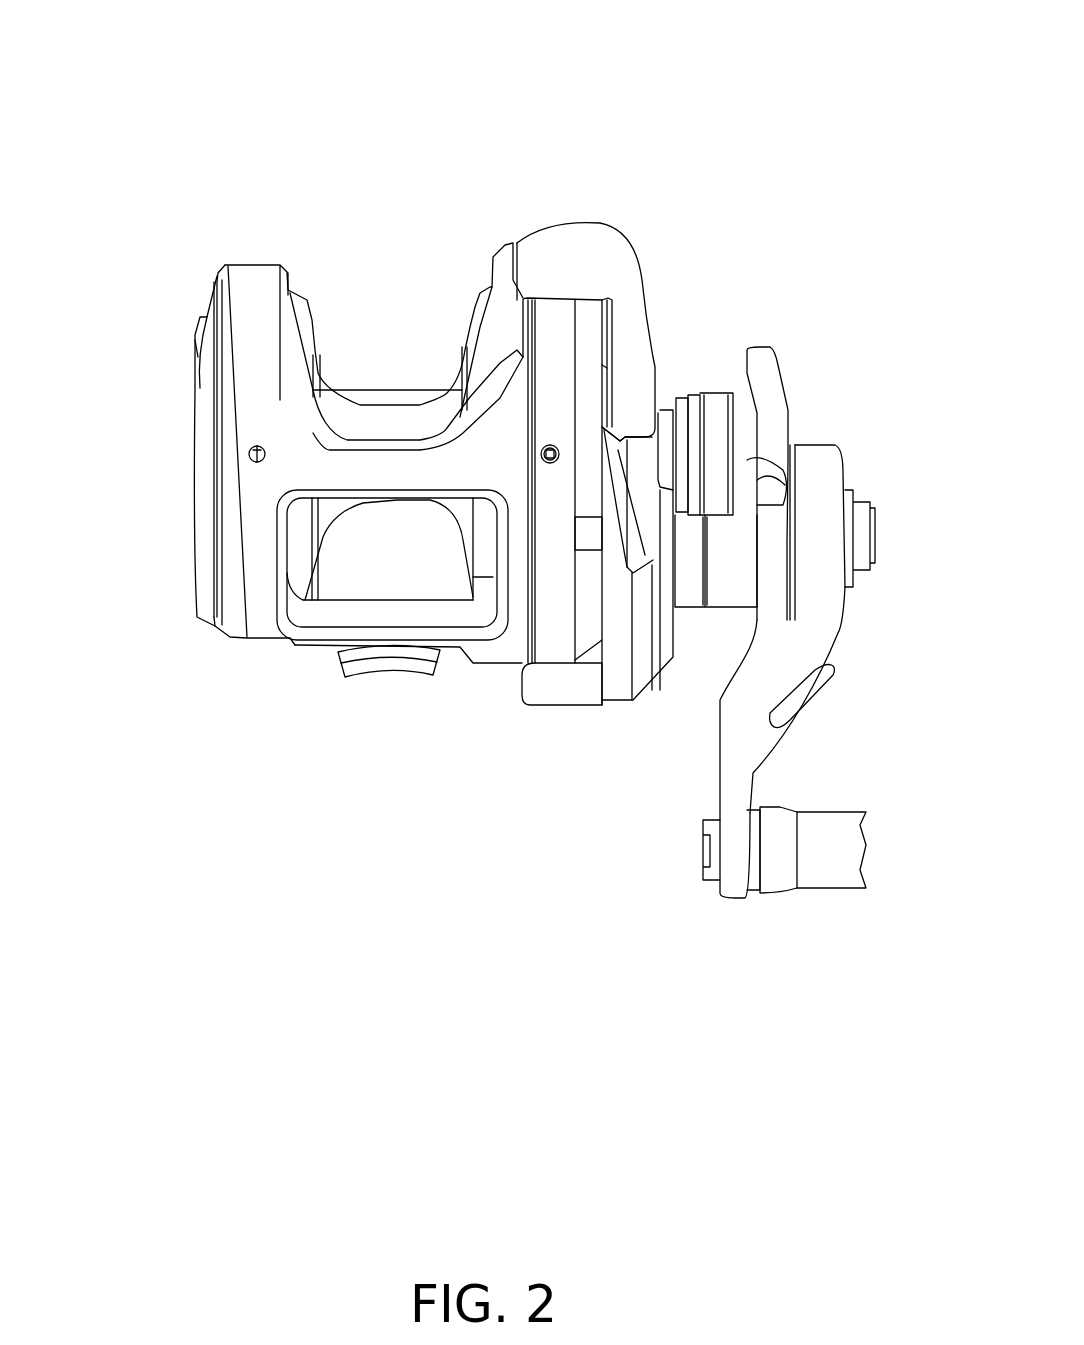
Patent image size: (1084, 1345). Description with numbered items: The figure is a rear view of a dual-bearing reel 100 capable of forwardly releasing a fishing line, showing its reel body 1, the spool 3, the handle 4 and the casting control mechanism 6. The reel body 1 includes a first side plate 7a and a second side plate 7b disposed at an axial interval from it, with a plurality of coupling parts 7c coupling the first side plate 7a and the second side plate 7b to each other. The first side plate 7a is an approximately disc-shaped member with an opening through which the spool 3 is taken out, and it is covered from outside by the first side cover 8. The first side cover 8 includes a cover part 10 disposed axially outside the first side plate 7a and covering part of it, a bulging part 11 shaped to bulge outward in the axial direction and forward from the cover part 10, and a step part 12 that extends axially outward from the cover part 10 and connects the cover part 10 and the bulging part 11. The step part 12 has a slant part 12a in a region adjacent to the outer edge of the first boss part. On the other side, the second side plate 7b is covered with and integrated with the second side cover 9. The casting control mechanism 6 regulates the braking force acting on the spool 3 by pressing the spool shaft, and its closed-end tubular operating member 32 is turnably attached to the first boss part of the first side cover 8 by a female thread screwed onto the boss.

The dual-bearing reel 100 is at (719, 101).
The reel body 1 is at (492, 243).
The spool 3 is at (388, 398).
The handle 4 is at (745, 910).
The casting control mechanism 6 is at (718, 368).
The first side plate 7a is at (523, 243).
The second side plate 7b is at (258, 265).
The coupling parts 7c is at (325, 648).
The first side cover 8 is at (580, 725).
The second side cover 9 is at (195, 515).
The cover part 10 is at (605, 648).
The bulging part 11 is at (683, 395).
The step part 12 is at (660, 702).
The slant part 12a is at (648, 503).
The operating member 32 is at (738, 448).